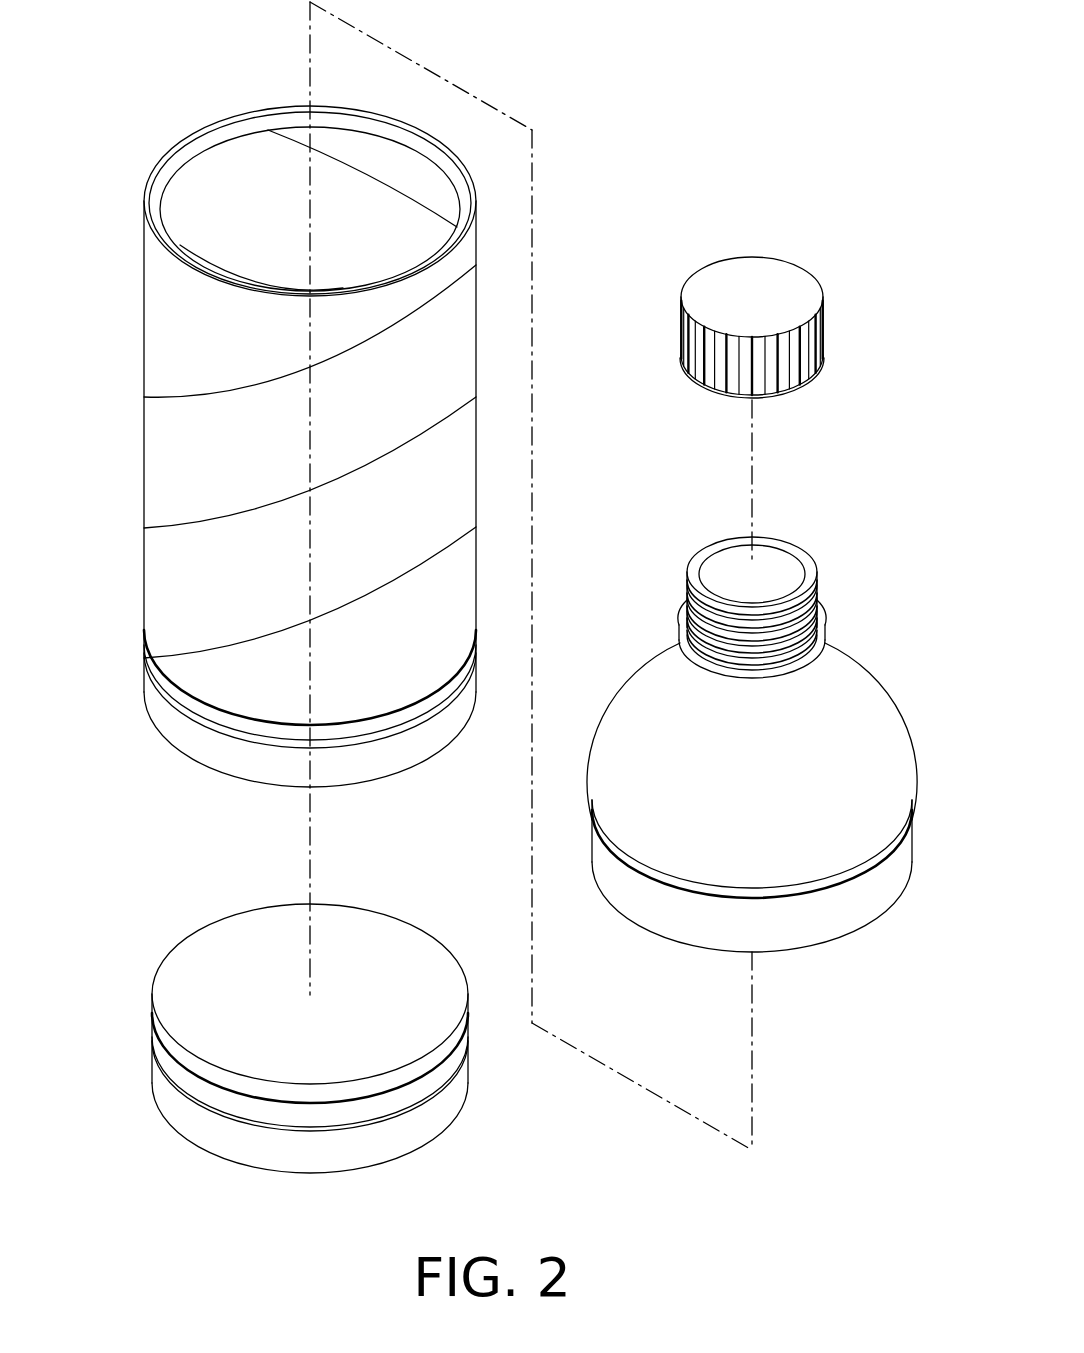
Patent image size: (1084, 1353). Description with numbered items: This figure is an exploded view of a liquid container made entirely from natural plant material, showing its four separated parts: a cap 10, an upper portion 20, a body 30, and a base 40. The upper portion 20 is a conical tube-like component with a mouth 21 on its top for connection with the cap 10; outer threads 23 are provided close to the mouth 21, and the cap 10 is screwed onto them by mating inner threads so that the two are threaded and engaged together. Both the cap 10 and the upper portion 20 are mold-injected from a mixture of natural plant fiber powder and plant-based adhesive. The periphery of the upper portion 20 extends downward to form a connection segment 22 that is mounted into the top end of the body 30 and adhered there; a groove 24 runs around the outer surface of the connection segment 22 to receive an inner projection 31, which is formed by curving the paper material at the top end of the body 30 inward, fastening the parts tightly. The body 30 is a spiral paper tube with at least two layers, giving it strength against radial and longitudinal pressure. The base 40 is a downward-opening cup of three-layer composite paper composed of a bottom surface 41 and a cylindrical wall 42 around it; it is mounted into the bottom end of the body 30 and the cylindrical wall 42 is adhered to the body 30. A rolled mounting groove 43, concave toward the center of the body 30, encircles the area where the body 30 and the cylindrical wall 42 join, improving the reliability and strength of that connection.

The cap 10 is at (762, 280).
The upper portion 20 is at (765, 729).
The mouth 21 is at (768, 562).
The connection segment 22 is at (828, 925).
The outer threads 23 is at (688, 607).
The groove 24 is at (870, 867).
The body 30 is at (265, 404).
The inner projection 31 is at (198, 147).
The base 40 is at (271, 1010).
The bottom surface 41 is at (233, 940).
The cylindrical wall 42 is at (172, 1108).
The mounting groove 43 is at (147, 662).